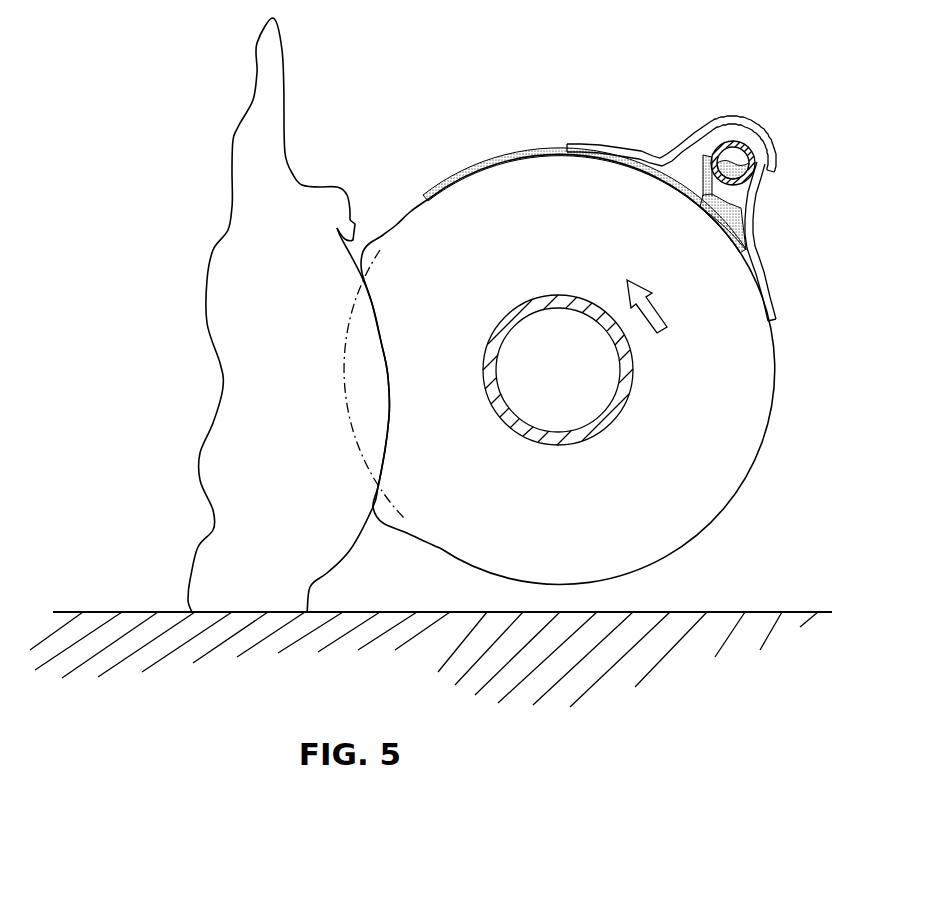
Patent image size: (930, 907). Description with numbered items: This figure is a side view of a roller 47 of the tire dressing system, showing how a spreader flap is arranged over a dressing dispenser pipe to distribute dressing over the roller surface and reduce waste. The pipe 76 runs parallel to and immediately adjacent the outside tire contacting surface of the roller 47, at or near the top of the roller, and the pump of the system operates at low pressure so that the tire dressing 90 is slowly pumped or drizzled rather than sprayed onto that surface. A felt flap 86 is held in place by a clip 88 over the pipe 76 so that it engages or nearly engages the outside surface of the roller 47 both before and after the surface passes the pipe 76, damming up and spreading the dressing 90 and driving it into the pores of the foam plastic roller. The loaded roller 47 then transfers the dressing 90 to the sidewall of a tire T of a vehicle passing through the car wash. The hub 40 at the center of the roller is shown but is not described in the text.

The tire T is at (388, 370).
The roller 47 is at (762, 383).
The shaft 40 is at (620, 407).
The tire dressing 90 is at (740, 206).
The pipe 76 is at (736, 144).
The clip 88 is at (753, 122).
The felt flap 86 is at (764, 280).